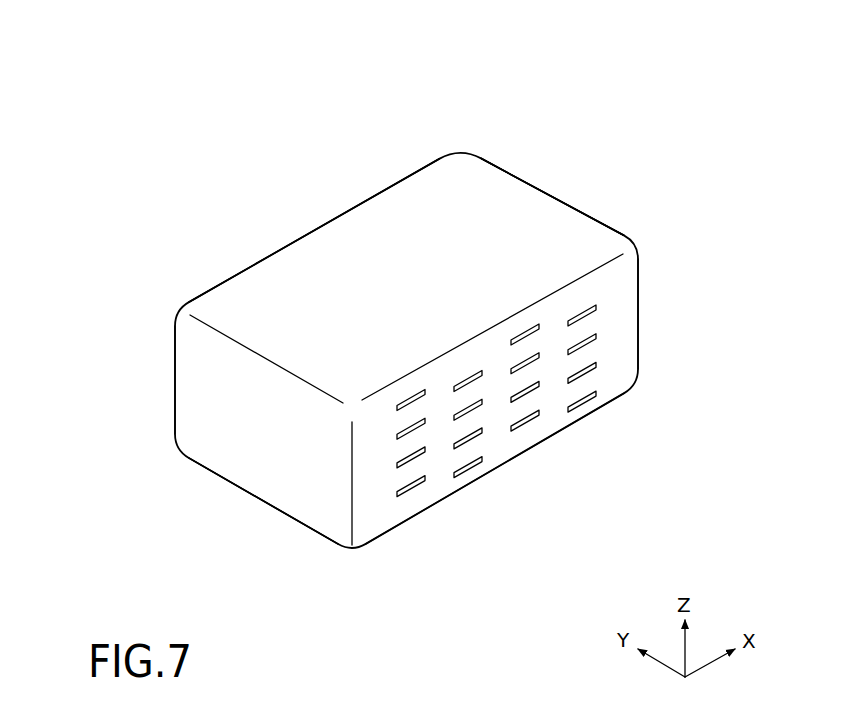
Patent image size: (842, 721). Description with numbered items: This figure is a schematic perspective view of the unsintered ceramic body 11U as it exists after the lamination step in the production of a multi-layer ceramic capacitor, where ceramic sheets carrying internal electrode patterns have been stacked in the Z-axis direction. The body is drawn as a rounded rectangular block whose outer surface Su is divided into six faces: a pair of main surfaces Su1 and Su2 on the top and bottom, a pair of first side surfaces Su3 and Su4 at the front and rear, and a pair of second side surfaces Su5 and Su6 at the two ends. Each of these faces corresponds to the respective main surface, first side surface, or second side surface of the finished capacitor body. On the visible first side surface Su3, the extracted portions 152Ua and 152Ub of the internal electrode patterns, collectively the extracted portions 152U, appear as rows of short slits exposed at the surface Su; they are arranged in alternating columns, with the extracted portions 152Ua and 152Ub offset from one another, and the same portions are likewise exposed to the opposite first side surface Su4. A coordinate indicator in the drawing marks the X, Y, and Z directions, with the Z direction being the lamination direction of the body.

The unsintered ceramic body 11U is at (463, 100).
The surface Su is at (597, 232).
The main surface Su1 is at (487, 175).
The main surface Su2 is at (268, 512).
The first side surface Su3 is at (633, 383).
The first side surface Su4 is at (200, 292).
The second side surface Su5 is at (195, 367).
The second side surface Su6 is at (556, 195).
The extracted portions 152U is at (490, 485).
The extracted portion 152Ua is at (415, 492).
The extracted portion 152Ub is at (465, 470).